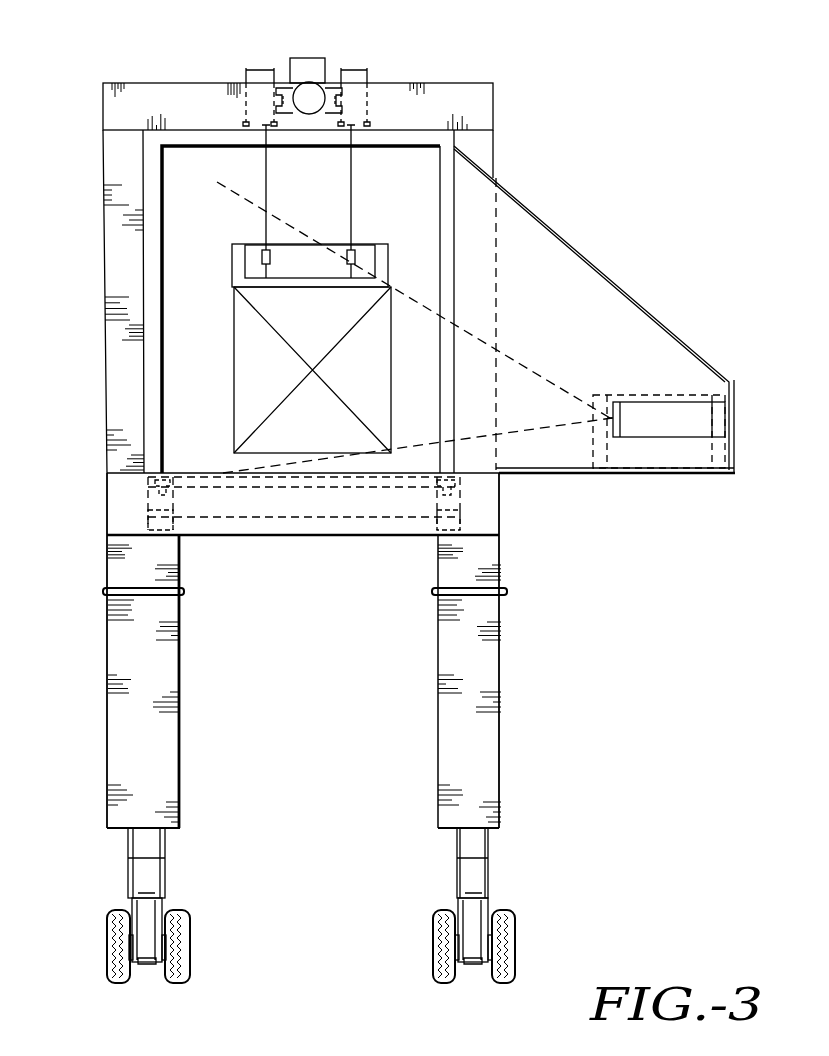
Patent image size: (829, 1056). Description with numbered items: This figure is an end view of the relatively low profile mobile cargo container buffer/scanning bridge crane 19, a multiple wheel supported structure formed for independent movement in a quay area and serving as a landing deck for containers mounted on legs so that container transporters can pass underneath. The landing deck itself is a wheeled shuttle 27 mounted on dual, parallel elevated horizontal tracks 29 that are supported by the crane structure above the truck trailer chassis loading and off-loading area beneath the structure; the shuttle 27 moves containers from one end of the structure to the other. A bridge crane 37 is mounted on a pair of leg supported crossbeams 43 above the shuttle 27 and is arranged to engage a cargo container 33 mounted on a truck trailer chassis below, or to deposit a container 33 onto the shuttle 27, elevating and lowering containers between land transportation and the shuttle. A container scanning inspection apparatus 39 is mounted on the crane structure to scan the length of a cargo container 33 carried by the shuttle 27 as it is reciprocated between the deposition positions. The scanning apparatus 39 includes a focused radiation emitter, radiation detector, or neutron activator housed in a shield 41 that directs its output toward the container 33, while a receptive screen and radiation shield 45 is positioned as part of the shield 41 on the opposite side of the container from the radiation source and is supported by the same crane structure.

The mobile cargo container buffer/scanning bridge crane 19 is at (613, 601).
The wheeled shuttle 27 is at (267, 485).
The elevated horizontal tracks 29 is at (162, 525).
The container 33 is at (234, 376).
The bridge crane 37 is at (262, 68).
The container scanning inspection apparatus 39 is at (667, 417).
The shield 41 is at (652, 313).
The leg supported crossbeams 43 is at (117, 113).
The receptive screen and radiation shield 45 is at (143, 292).